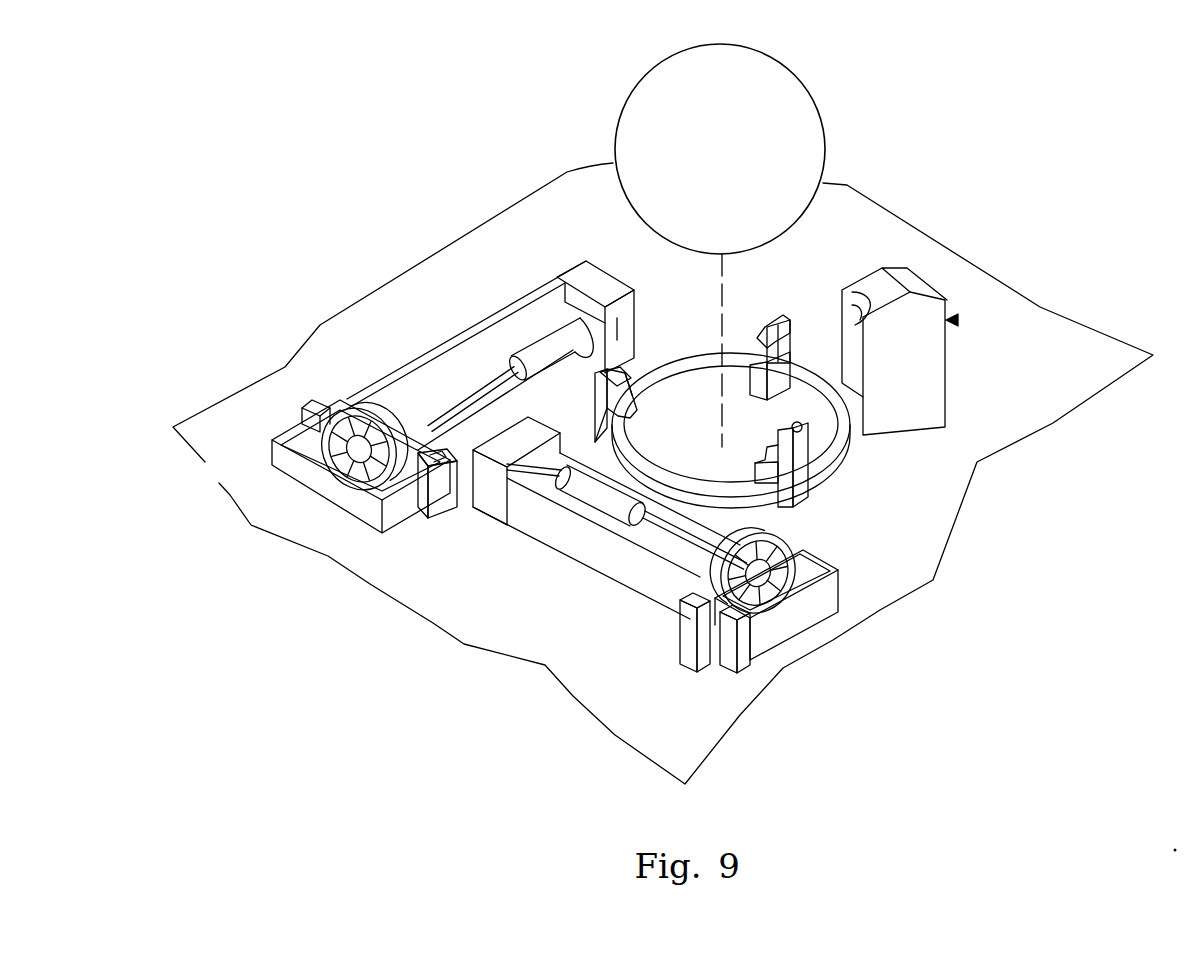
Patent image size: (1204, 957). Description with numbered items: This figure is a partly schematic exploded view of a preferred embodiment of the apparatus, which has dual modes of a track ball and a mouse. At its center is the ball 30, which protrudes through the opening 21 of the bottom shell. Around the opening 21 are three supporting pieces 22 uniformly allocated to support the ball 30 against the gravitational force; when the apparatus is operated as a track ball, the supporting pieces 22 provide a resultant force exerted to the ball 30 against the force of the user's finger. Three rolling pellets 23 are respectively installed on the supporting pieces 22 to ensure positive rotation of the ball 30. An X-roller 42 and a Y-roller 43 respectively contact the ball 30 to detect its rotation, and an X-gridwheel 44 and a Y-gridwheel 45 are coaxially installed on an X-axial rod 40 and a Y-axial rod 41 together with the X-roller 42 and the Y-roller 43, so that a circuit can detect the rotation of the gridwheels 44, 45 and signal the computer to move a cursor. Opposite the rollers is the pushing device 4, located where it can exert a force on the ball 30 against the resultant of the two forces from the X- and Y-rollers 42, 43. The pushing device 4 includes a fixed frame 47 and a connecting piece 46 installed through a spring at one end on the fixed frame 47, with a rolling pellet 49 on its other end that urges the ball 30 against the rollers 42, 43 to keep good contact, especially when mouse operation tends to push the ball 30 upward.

The pushing device 4 is at (958, 320).
The opening 21 is at (710, 430).
The supporting pieces 22 is at (613, 393).
The rolling pellets 23 is at (627, 378).
The ball 30 is at (820, 113).
The X-axial rod 40 is at (457, 393).
The Y-axial rod 41 is at (663, 523).
The X-roller 42 is at (547, 350).
The Y-roller 43 is at (587, 483).
The X-gridwheel 44 is at (363, 410).
The Y-gridwheel 45 is at (738, 602).
The connecting piece 46 is at (863, 402).
The fixed frame 47 is at (930, 358).
The rolling pellet 49 is at (852, 318).